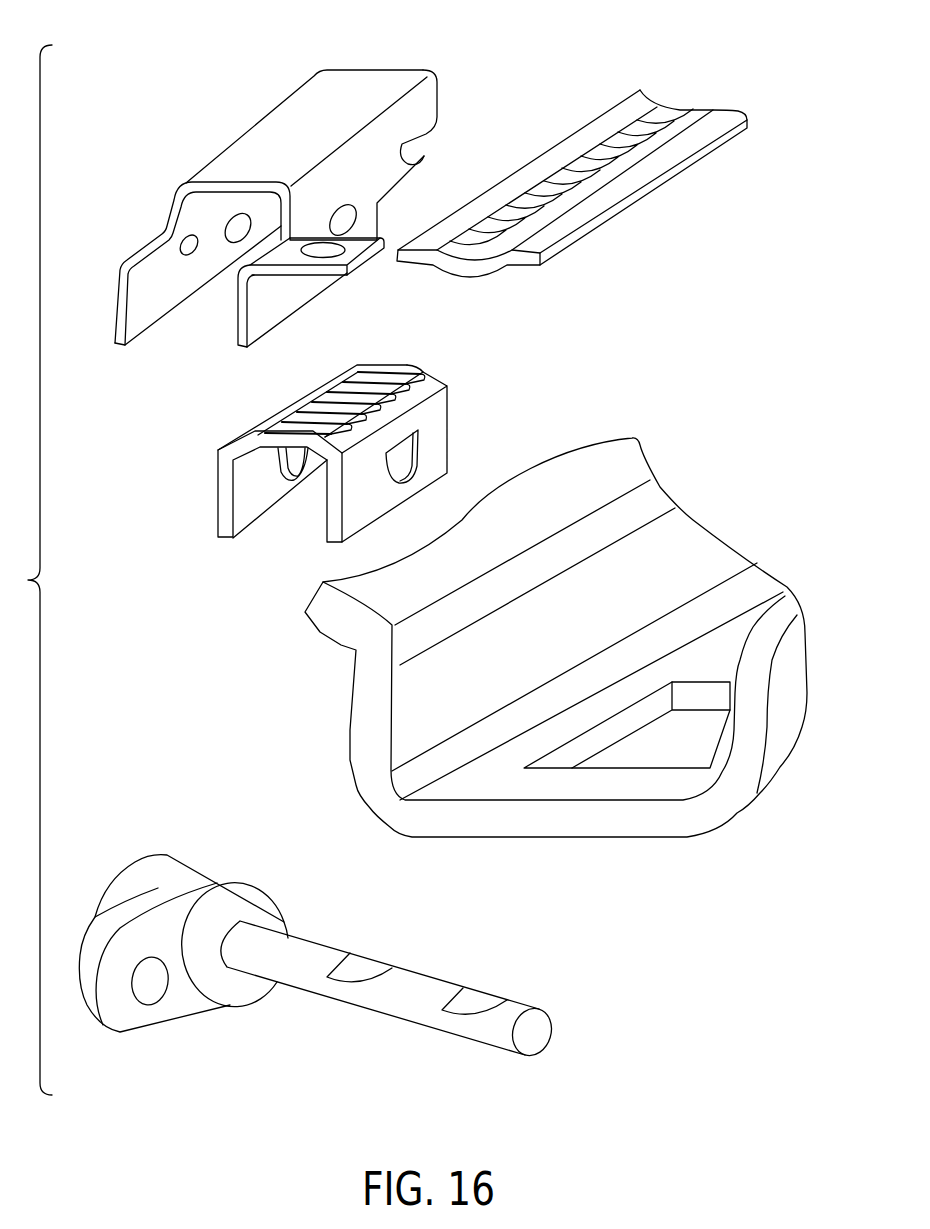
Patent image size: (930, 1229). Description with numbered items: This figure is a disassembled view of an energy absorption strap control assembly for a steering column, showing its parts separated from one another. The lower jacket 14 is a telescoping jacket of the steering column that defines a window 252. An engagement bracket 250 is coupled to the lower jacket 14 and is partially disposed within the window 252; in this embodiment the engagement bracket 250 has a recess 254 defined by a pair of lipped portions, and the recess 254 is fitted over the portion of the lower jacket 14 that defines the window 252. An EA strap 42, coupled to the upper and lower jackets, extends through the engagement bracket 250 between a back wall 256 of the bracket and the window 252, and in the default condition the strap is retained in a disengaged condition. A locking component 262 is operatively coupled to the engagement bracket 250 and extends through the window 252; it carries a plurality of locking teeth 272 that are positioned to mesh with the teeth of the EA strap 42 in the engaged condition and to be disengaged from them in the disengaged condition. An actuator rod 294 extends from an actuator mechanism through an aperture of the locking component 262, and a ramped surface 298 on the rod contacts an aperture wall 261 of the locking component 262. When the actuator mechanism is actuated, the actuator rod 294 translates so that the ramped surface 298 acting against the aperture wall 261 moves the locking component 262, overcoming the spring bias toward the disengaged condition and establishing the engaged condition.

The engagement bracket 250 is at (313, 186).
The back wall 256 is at (313, 115).
The recess 254 is at (443, 138).
The EA strap 42 is at (628, 108).
The locking teeth 272 is at (380, 380).
The locking component 262 is at (361, 439).
The aperture wall 261 is at (418, 460).
The window 252 is at (685, 716).
The lower jacket 14 is at (560, 637).
The actuator rod 294 is at (318, 958).
The ramped surface 298 is at (367, 972).